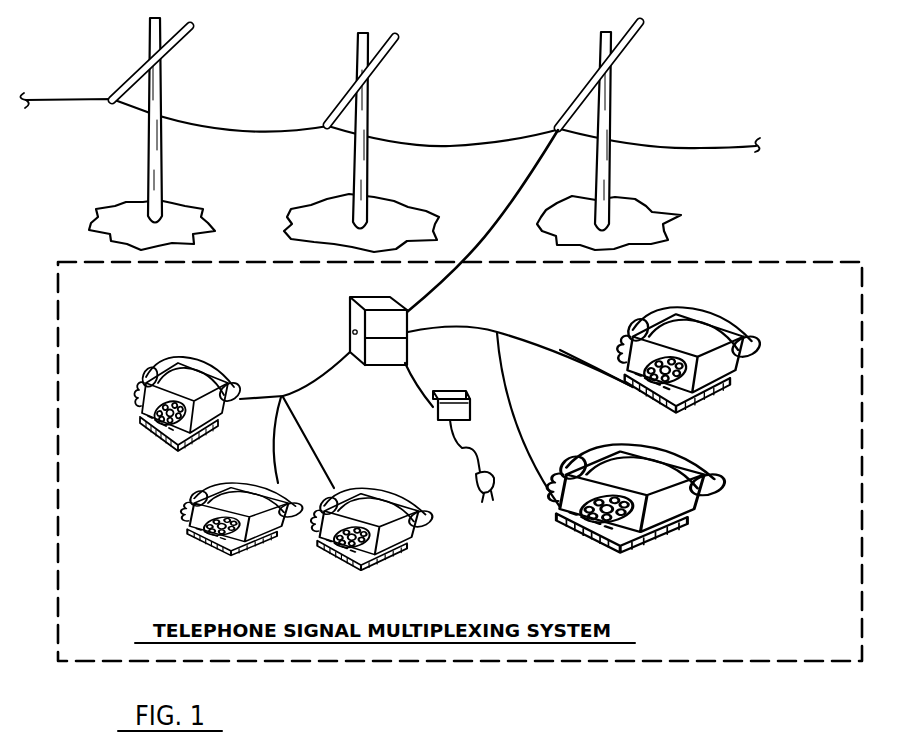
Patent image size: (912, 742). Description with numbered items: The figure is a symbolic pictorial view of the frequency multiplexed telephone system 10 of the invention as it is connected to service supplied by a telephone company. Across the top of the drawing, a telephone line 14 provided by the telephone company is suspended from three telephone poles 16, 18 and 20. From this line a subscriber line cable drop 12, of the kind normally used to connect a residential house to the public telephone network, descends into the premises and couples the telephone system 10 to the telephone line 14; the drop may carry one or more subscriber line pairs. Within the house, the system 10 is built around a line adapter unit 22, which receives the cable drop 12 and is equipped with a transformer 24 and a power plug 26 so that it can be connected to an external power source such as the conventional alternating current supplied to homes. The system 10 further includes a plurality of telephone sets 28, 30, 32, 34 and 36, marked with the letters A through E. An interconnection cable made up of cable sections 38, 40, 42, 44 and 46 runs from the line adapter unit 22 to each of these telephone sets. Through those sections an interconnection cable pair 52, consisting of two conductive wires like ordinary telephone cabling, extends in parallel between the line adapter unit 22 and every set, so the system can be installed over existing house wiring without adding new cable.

The frequency multiplexed telephone system 10 is at (822, 512).
The subscriber line cable drop 12 is at (510, 208).
The telephone line 14 is at (663, 145).
The telephone pole 16 is at (177, 43).
The telephone pole 18 is at (392, 52).
The telephone pole 20 is at (637, 37).
The line adapter unit 22 is at (378, 331).
The transformer 24 is at (453, 403).
The power plug 26 is at (494, 476).
The telephone set 28 is at (163, 442).
The telephone set 30 is at (260, 543).
The telephone set 32 is at (403, 543).
The telephone set 34 is at (660, 530).
The telephone set 36 is at (706, 388).
The cable section 38 is at (255, 398).
The cable section 40 is at (271, 450).
The cable section 42 is at (323, 473).
The cable section 44 is at (547, 343).
The cable section 46 is at (537, 463).
The interconnection cable pair 52 is at (333, 363).